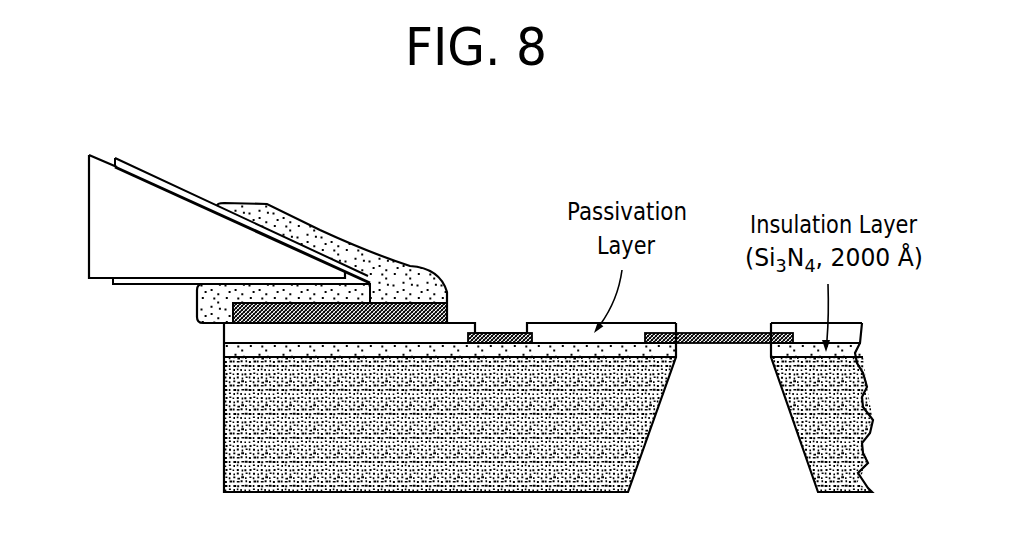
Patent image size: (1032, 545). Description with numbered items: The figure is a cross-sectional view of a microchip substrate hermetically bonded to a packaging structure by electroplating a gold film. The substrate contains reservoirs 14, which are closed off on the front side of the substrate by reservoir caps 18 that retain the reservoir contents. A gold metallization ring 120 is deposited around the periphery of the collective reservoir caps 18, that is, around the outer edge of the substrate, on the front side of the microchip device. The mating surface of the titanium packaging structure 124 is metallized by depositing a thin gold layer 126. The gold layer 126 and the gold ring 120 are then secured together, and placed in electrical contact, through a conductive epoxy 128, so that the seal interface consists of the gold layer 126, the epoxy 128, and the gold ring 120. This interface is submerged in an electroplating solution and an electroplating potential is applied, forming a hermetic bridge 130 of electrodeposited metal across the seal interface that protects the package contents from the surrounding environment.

The reservoir 14 is at (735, 429).
The reservoir cap 18 is at (717, 332).
The gold metallization ring 120 is at (462, 313).
The titanium packaging structure 124 is at (87, 203).
The gold layer 126 is at (197, 175).
The conductive epoxy 128 is at (232, 293).
The hermetic bridge 130 is at (365, 230).